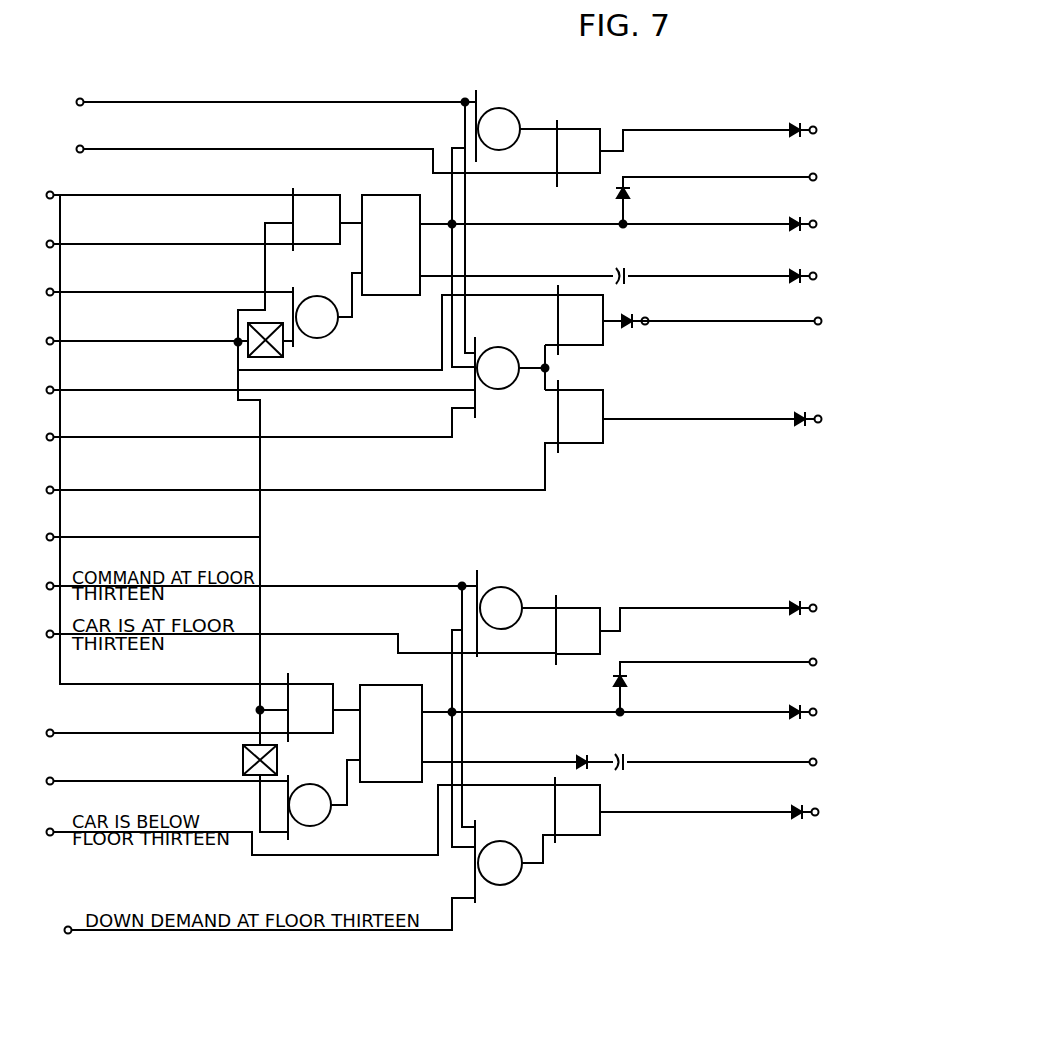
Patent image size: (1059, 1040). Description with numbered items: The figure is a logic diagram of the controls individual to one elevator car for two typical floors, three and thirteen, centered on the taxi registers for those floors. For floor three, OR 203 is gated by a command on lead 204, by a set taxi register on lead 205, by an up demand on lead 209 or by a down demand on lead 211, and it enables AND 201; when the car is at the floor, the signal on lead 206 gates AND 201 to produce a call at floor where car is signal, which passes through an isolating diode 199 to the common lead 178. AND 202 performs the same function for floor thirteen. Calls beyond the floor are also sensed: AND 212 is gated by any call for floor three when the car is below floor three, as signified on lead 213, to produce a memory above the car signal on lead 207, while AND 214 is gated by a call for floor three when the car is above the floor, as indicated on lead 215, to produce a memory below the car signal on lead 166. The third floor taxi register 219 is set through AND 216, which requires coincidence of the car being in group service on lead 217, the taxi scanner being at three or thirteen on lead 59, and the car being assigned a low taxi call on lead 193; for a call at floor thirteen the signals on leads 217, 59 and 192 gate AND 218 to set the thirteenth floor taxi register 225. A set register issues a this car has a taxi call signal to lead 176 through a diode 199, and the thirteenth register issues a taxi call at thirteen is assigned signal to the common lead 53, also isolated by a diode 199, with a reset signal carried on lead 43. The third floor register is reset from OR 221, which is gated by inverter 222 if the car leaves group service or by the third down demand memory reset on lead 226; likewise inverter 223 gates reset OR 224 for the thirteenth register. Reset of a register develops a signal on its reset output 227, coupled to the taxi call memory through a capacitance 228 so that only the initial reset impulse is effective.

The lead 204 is at (366, 102).
The lead 206 is at (366, 149).
The OR 203 is at (517, 129).
The AND 201 is at (673, 153).
The common lead 178 is at (789, 136).
The lead 59 is at (254, 196).
The AND 216 is at (327, 219).
The lead 193 is at (150, 243).
The lead 226 is at (162, 294).
The OR 221 is at (327, 302).
The inverter 222 is at (284, 358).
The lead 213 is at (356, 370).
The lead 209 is at (378, 390).
The lead 211 is at (366, 437).
The lead 215 is at (417, 490).
The lead 217 is at (188, 538).
The AND 212 is at (603, 320).
The lead 207 is at (712, 322).
The AND 214 is at (676, 416).
The lead 166 is at (783, 419).
The third floor taxi register 219 is at (399, 200).
The lead 205 is at (452, 205).
The reset output 227 is at (483, 276).
The capacitance 228 is at (623, 520).
The lead 176 is at (805, 232).
The isolating diode 199 is at (795, 128).
The lead 192 is at (256, 710).
The AND 218 is at (204, 712).
The AND 202 is at (673, 630).
The inverter 223 is at (277, 758).
The reset OR 224 is at (204, 800).
The thirteenth floor taxi register 225 is at (375, 783).
The lead 43 is at (775, 763).
The lead 53 is at (617, 707).